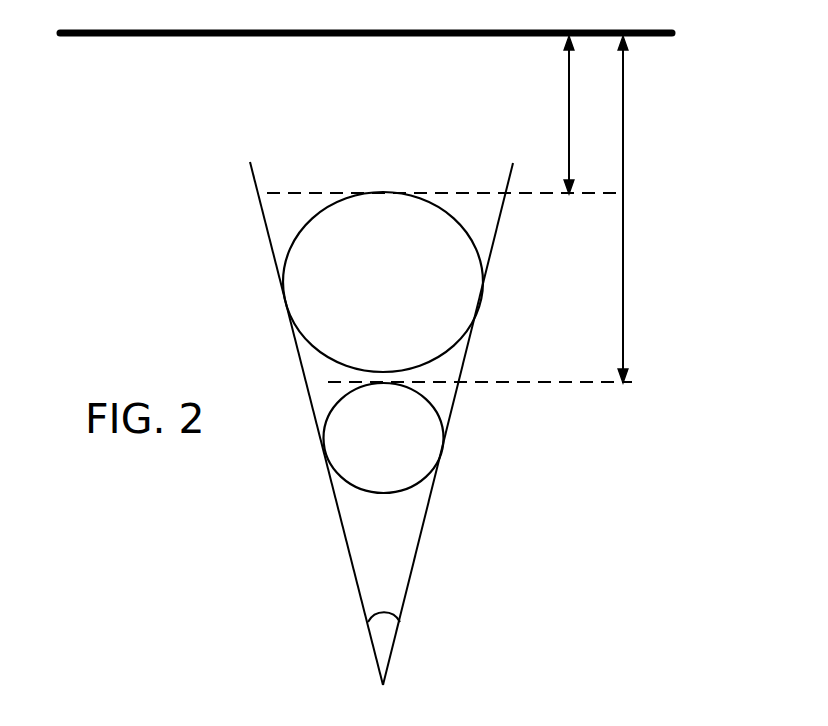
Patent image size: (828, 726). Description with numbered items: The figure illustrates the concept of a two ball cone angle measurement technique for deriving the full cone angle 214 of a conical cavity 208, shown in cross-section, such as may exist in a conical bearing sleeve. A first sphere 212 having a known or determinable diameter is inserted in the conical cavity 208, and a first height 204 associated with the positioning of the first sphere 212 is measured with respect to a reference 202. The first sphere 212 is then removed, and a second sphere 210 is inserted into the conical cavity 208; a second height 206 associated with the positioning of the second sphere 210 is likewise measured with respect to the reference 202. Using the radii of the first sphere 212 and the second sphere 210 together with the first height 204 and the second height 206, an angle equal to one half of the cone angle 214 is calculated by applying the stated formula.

The reference 202 is at (157, 40).
The first height 204 is at (569, 107).
The second height 206 is at (623, 100).
The conical cavity 208 is at (357, 189).
The second sphere 210 is at (423, 480).
The first sphere 212 is at (452, 345).
The angle 2Θ 214 is at (400, 607).